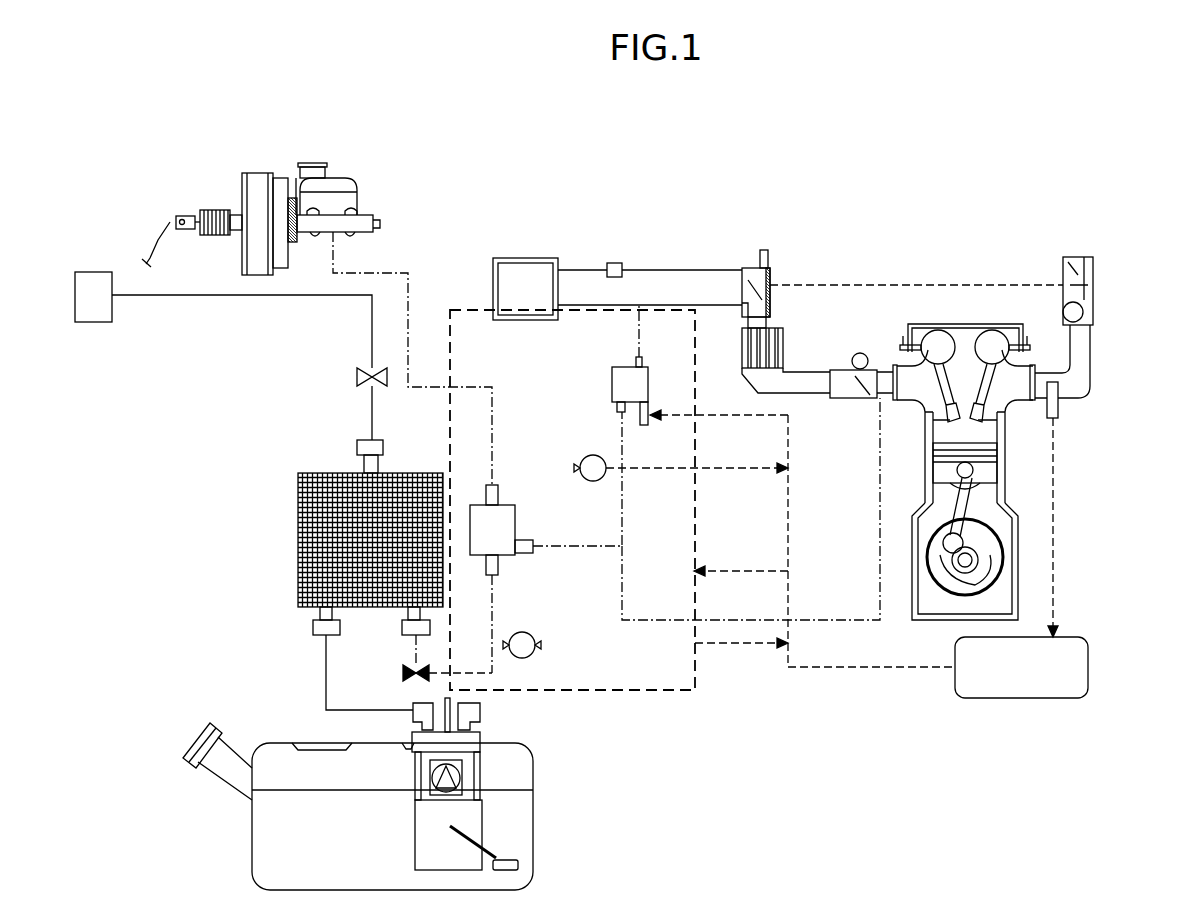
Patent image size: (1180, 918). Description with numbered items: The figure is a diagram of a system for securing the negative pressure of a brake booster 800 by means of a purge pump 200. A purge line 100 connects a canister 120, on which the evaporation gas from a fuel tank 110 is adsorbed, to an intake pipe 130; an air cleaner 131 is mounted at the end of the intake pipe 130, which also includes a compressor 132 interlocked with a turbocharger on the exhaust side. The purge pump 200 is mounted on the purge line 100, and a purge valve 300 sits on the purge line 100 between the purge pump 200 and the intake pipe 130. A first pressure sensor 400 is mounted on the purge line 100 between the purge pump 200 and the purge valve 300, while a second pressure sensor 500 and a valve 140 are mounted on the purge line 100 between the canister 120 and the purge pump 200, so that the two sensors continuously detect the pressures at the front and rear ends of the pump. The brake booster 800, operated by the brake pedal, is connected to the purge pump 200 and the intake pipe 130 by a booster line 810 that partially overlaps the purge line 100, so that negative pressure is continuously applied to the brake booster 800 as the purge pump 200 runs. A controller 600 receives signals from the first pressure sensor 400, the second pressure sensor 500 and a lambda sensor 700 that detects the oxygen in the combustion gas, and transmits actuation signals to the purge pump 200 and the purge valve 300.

The purge line 100 is at (576, 543).
The fuel tank 110 is at (535, 830).
The canister 120 is at (305, 543).
The intake pipe 130 is at (656, 283).
The air cleaner 131 is at (526, 278).
The compressor 132 is at (769, 262).
The valve 140 is at (400, 672).
The purge pump 200 is at (507, 504).
The purge valve 300 is at (613, 380).
The first pressure sensor 400 is at (595, 472).
The second pressure sensor 500 is at (526, 651).
The controller 600 is at (1025, 700).
The lambda sensor 700 is at (1060, 401).
The brake booster 800 is at (374, 176).
The booster line 810 is at (409, 312).